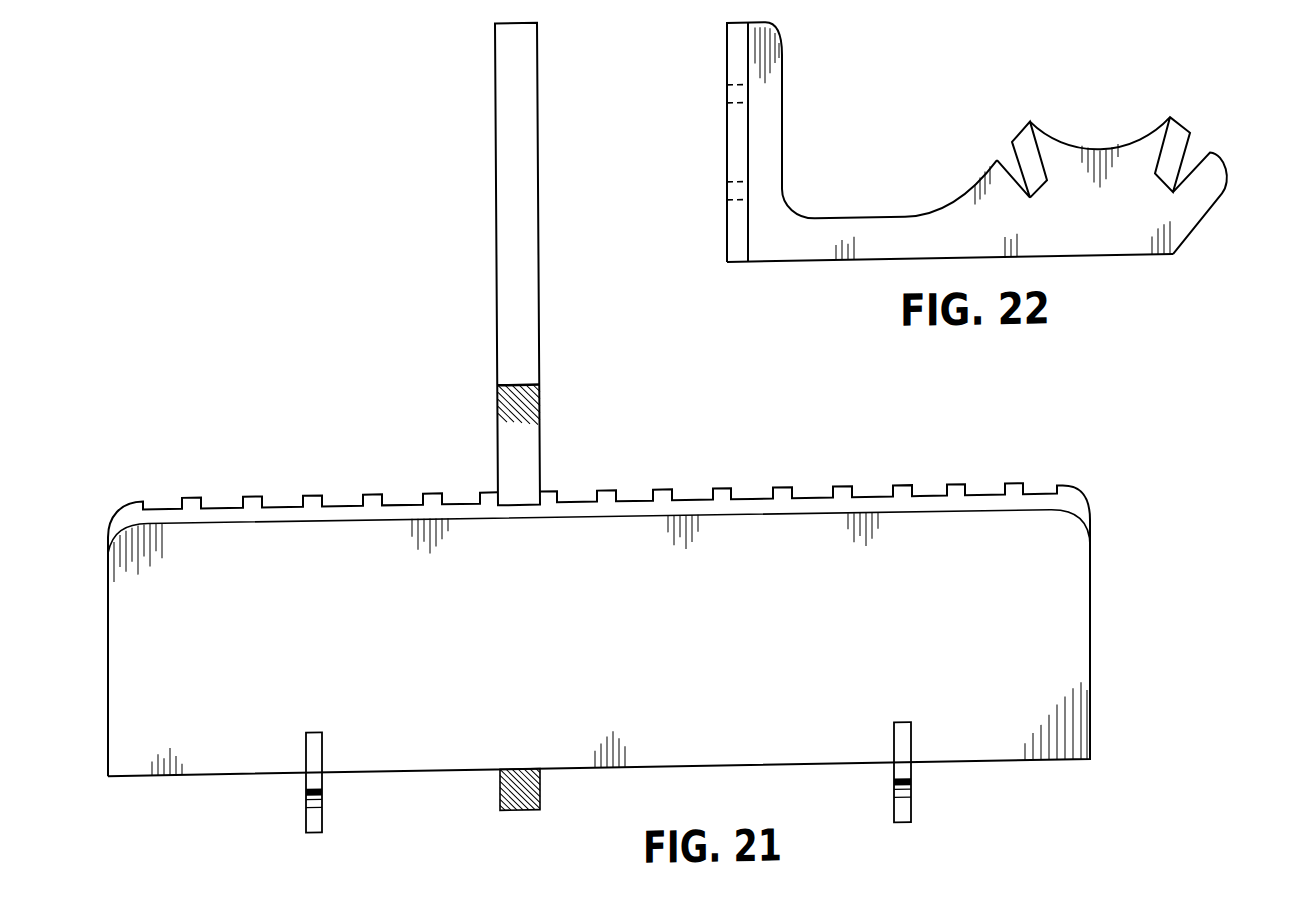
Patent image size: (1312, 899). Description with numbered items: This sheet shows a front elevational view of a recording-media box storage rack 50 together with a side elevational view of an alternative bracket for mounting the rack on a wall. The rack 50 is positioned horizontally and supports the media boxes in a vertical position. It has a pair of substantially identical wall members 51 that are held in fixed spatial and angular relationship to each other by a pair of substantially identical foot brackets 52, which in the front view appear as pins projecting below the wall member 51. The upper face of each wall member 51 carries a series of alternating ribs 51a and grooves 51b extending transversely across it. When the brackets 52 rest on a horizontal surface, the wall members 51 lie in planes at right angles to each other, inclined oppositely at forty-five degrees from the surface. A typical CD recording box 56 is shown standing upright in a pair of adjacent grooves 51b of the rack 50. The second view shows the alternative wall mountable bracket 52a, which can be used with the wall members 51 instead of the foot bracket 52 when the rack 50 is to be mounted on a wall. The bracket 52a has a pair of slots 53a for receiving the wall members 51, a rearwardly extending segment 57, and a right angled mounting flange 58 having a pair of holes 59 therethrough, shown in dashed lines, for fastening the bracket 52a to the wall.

In FIG. 21, the recording-media box storage rack 50 is at (925, 445).
In FIG. 21, the wall member 51 is at (1090, 610).
In FIG. 21, the ribs 51a is at (722, 496).
In FIG. 21, the grooves 51b is at (920, 500).
In FIG. 21, the foot bracket 52 is at (322, 800).
In FIG. 21, the CD recording box 56 is at (530, 170).
In FIG. 22, the rearwardly extending segment 57 is at (912, 217).
In FIG. 22, the mounting flange 58 is at (727, 64).
In FIG. 22, the holes 59 is at (727, 93).
In FIG. 22, the slots 53a is at (1007, 162).
In FIG. 22, the wall mountable bracket 52a is at (1193, 236).